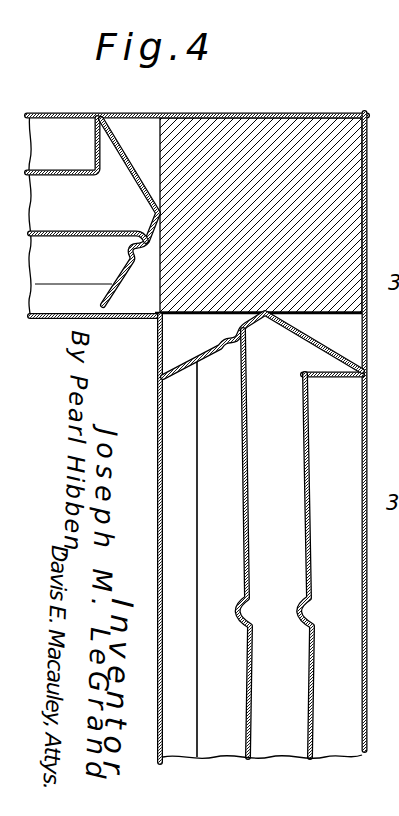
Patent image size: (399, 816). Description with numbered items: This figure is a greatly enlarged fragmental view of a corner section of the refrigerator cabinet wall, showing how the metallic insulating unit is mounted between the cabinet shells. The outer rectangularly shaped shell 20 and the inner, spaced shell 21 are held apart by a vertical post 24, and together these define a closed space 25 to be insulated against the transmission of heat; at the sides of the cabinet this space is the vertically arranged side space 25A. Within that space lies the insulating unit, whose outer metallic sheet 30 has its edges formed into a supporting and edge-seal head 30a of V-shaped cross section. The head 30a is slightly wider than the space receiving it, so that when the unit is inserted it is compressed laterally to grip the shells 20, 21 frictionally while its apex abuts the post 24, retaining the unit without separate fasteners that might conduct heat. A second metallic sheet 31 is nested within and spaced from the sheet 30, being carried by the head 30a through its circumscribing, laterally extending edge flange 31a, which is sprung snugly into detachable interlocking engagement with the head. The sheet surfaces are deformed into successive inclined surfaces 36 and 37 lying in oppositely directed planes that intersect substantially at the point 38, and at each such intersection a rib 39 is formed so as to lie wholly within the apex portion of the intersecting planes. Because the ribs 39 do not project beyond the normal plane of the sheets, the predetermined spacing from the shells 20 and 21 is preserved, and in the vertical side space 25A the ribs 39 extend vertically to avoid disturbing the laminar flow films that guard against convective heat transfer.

The outer shell 20 is at (43, 102).
The inner shell 21 is at (157, 408).
The vertical post 24 is at (255, 128).
The closed space 25 is at (382, 431).
The side closed space 25A is at (225, 495).
The outer metallic sheet 30 is at (60, 170).
The edge-seal head 30a is at (133, 147).
The second metallic sheet 31 is at (70, 231).
The edge flange 31a is at (212, 357).
The inclined surface 36 is at (312, 470).
The inclined surface 37 is at (313, 690).
The point of intersection 38 is at (312, 612).
The rib 39 is at (240, 610).